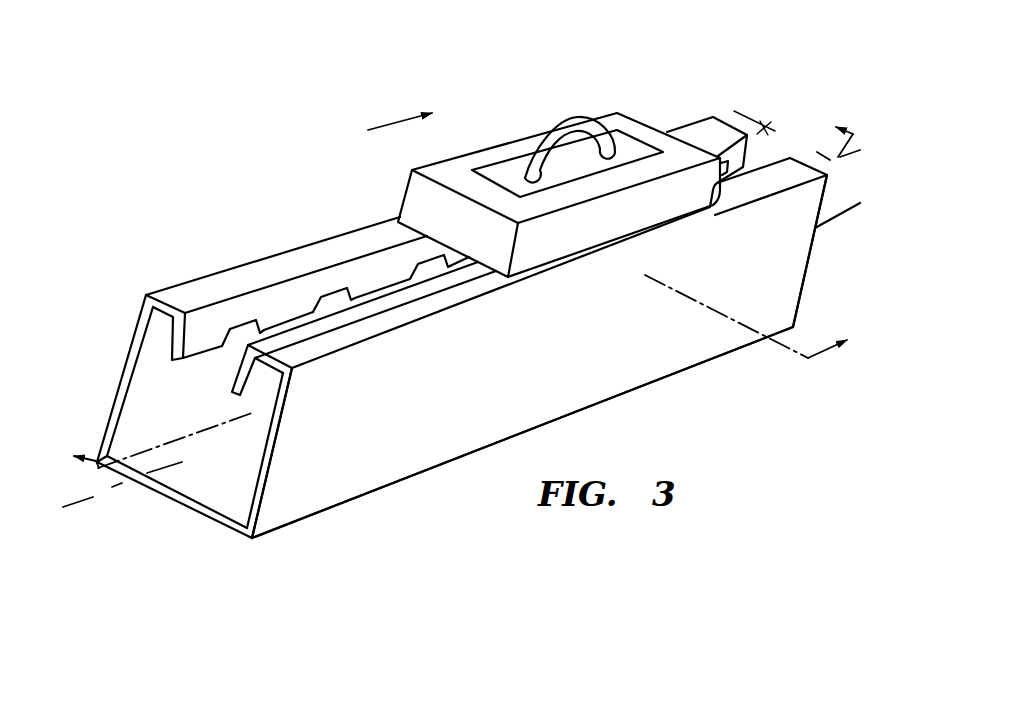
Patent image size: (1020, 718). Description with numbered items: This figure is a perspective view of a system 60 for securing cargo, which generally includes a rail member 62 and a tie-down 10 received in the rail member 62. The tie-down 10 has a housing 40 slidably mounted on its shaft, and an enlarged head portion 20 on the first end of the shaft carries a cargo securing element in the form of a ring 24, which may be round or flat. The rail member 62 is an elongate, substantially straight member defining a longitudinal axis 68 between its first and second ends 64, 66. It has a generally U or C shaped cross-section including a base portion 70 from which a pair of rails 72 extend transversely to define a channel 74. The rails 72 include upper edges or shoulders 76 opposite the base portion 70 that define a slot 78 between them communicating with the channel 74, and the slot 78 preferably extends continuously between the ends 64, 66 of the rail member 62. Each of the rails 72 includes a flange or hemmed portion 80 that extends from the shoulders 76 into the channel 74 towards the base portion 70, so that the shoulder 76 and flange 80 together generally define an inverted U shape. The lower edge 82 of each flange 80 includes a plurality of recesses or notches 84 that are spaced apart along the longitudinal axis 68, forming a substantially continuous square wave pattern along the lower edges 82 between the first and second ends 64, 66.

The tie-down 10 is at (602, 97).
The head portion 20 is at (492, 170).
The ring 24 is at (564, 117).
The housing 40 is at (413, 195).
The system for securing cargo 60 is at (505, 90).
The rail member 62 is at (598, 376).
The first end 64 is at (302, 498).
The second end 66 is at (787, 302).
The longitudinal axis 68 is at (112, 490).
The base portion 70 is at (221, 522).
The rails 72 is at (140, 317).
The channel 74 is at (216, 494).
The shoulders 76 is at (353, 327).
The slot 78 is at (223, 335).
The flange 80 is at (173, 340).
The lower edge 82 is at (175, 363).
The notches 84 is at (223, 345).